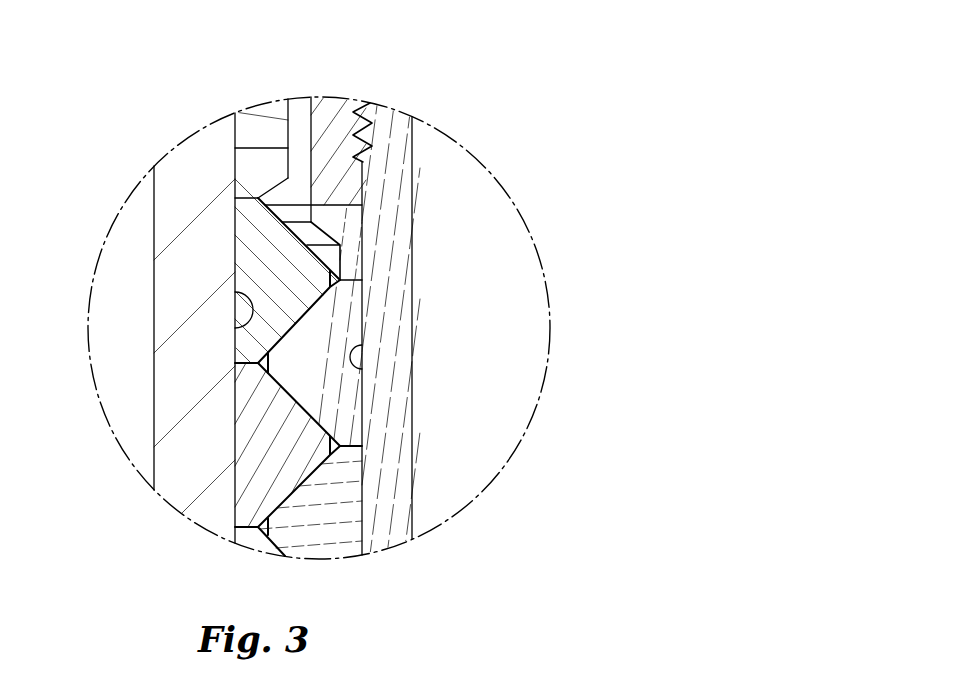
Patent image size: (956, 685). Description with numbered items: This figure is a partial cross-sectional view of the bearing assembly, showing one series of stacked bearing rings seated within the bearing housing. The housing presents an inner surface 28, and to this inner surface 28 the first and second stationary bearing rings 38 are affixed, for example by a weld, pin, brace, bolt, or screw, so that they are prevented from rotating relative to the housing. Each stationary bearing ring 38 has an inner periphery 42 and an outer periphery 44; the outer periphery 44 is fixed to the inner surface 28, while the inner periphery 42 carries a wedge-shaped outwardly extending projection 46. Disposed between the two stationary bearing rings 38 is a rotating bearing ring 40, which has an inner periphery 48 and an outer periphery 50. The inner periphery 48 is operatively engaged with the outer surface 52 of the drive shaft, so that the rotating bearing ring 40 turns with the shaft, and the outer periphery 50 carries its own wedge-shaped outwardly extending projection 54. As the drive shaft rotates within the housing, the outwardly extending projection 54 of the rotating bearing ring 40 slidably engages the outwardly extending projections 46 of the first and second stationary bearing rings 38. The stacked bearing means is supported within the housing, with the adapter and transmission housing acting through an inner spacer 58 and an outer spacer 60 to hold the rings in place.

The inner surface 28 is at (362, 369).
The stationary bearing ring 38 is at (345, 332).
The rotating bearing ring 40 is at (275, 270).
The inner periphery 42 is at (298, 327).
The outer periphery 44 is at (362, 497).
The outwardly extending projection 46 is at (282, 372).
The inner periphery 48 is at (235, 260).
The outer periphery 50 is at (320, 277).
The outer surface 52 is at (235, 328).
The outwardly extending projection 54 is at (340, 446).
The inner spacer 58 is at (297, 212).
The outer spacer 60 is at (340, 212).